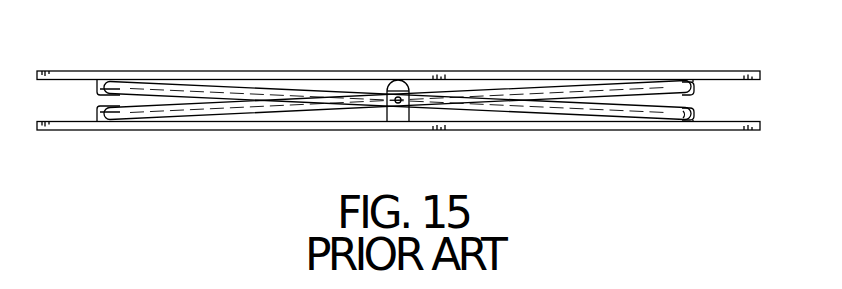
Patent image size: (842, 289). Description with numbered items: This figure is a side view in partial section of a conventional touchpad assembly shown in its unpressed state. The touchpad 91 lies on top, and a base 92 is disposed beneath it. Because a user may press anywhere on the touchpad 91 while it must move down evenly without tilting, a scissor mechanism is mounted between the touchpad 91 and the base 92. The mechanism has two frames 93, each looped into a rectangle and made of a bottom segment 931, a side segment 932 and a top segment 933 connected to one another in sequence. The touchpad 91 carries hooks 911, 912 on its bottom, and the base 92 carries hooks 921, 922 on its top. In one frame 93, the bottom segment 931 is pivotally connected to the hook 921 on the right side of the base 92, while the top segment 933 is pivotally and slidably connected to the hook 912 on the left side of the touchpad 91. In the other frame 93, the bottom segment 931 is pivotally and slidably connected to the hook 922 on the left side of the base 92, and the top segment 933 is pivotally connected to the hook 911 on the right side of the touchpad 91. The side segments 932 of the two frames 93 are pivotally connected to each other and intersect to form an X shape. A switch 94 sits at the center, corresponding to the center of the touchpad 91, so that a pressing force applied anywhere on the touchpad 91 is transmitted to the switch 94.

The touchpad 91 is at (558, 78).
The base 92 is at (540, 125).
The frame 93 is at (397, 71).
The switch 94 is at (403, 88).
The hook 911 is at (690, 90).
The hook 912 is at (98, 91).
The hook 921 is at (700, 118).
The hook 922 is at (103, 112).
The bottom segment 931 is at (682, 115).
The side segment 932 is at (247, 95).
The top segment 933 is at (113, 83).